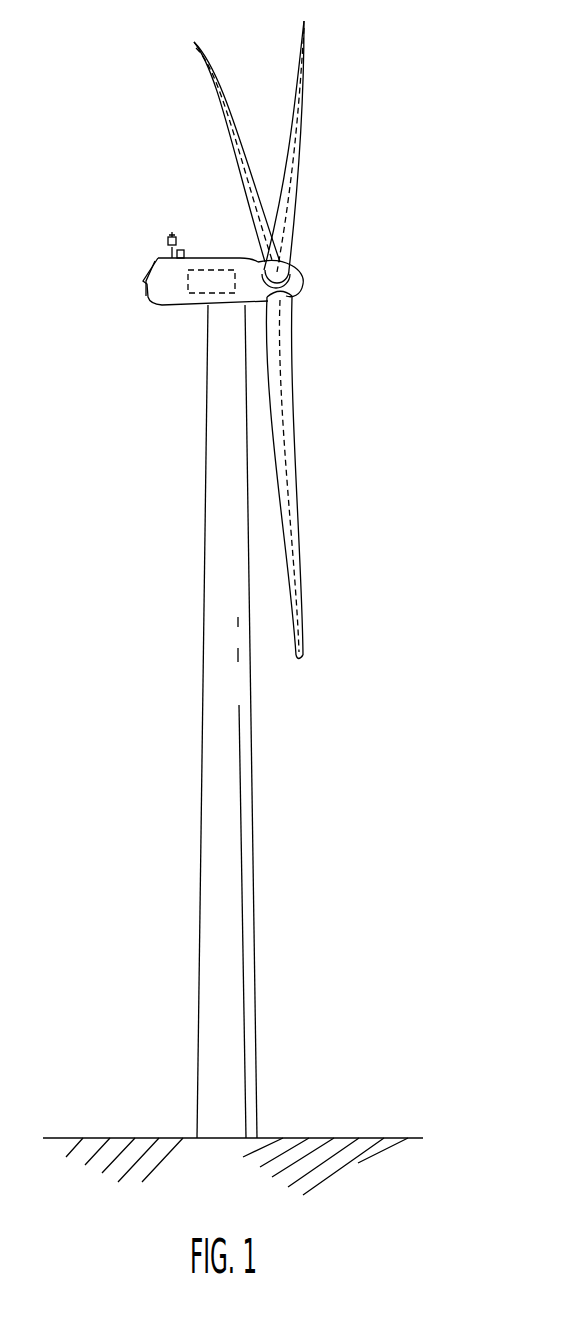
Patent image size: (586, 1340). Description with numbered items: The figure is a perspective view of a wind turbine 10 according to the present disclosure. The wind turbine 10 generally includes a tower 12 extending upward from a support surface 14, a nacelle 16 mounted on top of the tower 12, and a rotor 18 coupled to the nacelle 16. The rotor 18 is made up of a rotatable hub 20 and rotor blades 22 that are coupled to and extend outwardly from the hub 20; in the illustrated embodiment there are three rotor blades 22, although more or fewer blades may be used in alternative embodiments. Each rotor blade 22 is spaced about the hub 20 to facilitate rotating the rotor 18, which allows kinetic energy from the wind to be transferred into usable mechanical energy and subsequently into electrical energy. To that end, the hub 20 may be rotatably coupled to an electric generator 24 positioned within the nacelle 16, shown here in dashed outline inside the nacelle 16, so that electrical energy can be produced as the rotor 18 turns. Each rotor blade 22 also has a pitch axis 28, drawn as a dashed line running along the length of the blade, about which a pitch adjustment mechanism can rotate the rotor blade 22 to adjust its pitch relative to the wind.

The wind turbine 10 is at (467, 97).
The tower 12 is at (212, 835).
The support surface 14 is at (125, 1138).
The nacelle 16 is at (182, 307).
The rotor 18 is at (307, 257).
The rotatable hub 20 is at (300, 288).
The rotor blade 22 is at (293, 108).
The electric generator 24 is at (215, 269).
The pitch axis 28 is at (243, 185).